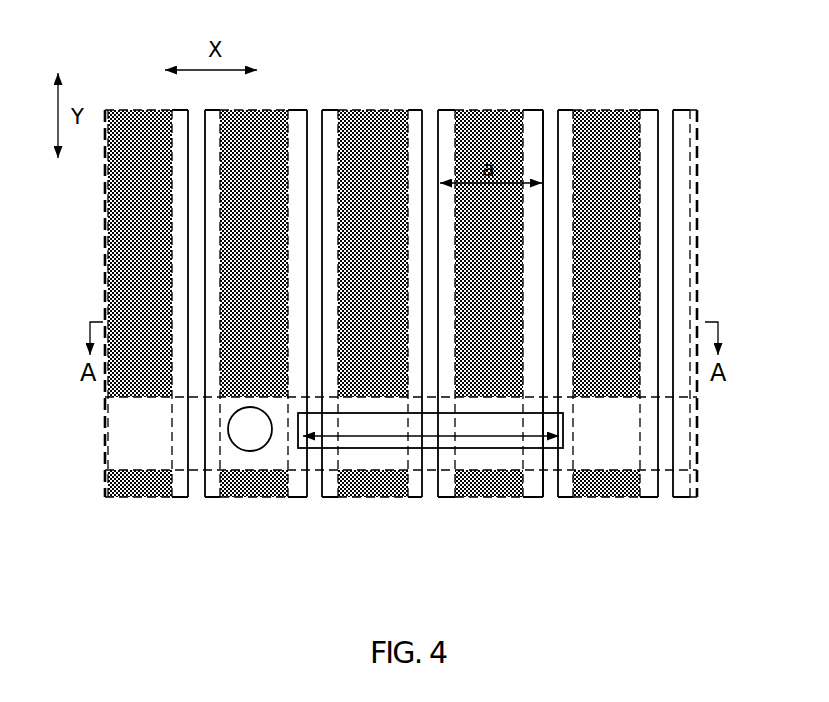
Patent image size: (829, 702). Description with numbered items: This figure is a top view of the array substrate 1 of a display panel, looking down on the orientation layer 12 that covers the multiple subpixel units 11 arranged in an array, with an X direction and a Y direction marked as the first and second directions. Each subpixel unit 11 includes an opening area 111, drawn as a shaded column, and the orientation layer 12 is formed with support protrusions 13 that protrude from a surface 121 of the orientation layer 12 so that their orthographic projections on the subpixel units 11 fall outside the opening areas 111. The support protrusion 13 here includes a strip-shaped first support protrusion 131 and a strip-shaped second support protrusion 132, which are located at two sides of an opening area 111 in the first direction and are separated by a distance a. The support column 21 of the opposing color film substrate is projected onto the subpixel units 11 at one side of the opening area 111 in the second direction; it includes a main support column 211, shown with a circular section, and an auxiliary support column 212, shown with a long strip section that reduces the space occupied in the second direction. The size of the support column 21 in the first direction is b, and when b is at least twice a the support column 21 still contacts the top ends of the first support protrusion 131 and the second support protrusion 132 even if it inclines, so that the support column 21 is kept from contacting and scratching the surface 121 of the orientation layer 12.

The array substrate 1 is at (698, 127).
The subpixel unit 11 is at (674, 268).
The opening area 111 is at (613, 192).
The surface of the orientation layer 121 is at (613, 266).
The orientation layer 12 is at (534, 108).
The support protrusion 13 is at (609, 353).
The first support protrusion 131 is at (548, 485).
The second support protrusion 132 is at (661, 325).
The support column 21 is at (395, 500).
The main support column 211 is at (266, 449).
The auxiliary support column 212 is at (430, 476).